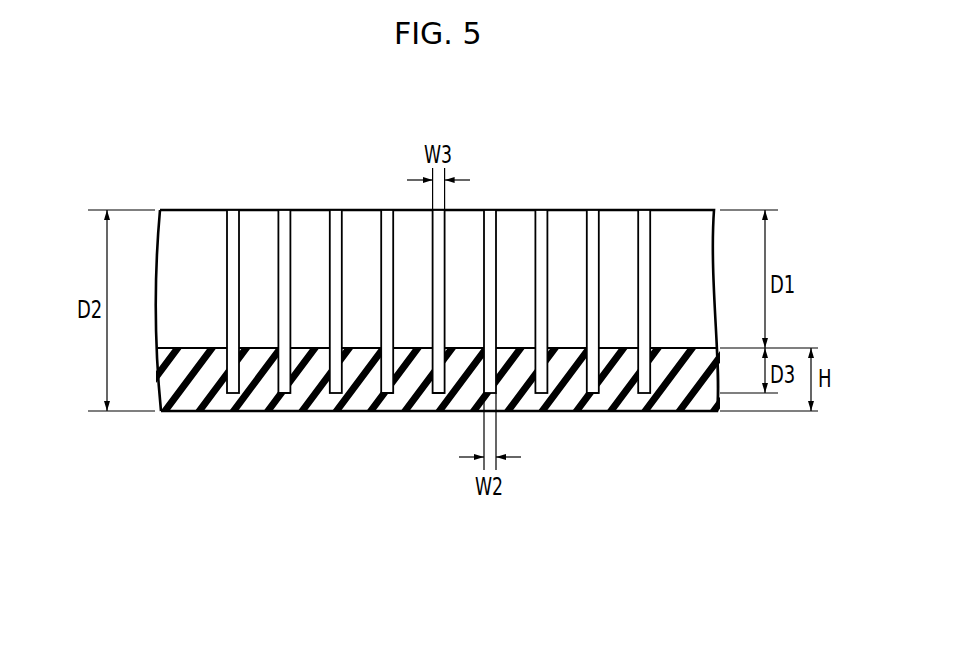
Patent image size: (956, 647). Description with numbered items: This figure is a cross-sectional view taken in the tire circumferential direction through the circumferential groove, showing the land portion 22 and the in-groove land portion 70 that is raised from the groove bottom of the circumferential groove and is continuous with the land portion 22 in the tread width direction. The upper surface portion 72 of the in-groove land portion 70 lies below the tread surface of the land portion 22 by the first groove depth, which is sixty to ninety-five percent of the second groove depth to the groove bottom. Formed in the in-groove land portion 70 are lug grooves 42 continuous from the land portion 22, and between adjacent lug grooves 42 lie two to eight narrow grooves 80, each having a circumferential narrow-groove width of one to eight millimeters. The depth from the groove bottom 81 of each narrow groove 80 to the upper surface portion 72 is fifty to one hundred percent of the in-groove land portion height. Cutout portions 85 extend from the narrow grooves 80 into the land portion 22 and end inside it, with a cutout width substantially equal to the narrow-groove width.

The land portion 22 is at (684, 209).
The lug groove 42 is at (333, 222).
The in-groove land portion 70 is at (682, 348).
The upper surface portion 72 is at (197, 347).
The narrow groove 80 is at (385, 393).
The groove bottom 81 is at (283, 393).
The cutout portion 85 is at (230, 222).